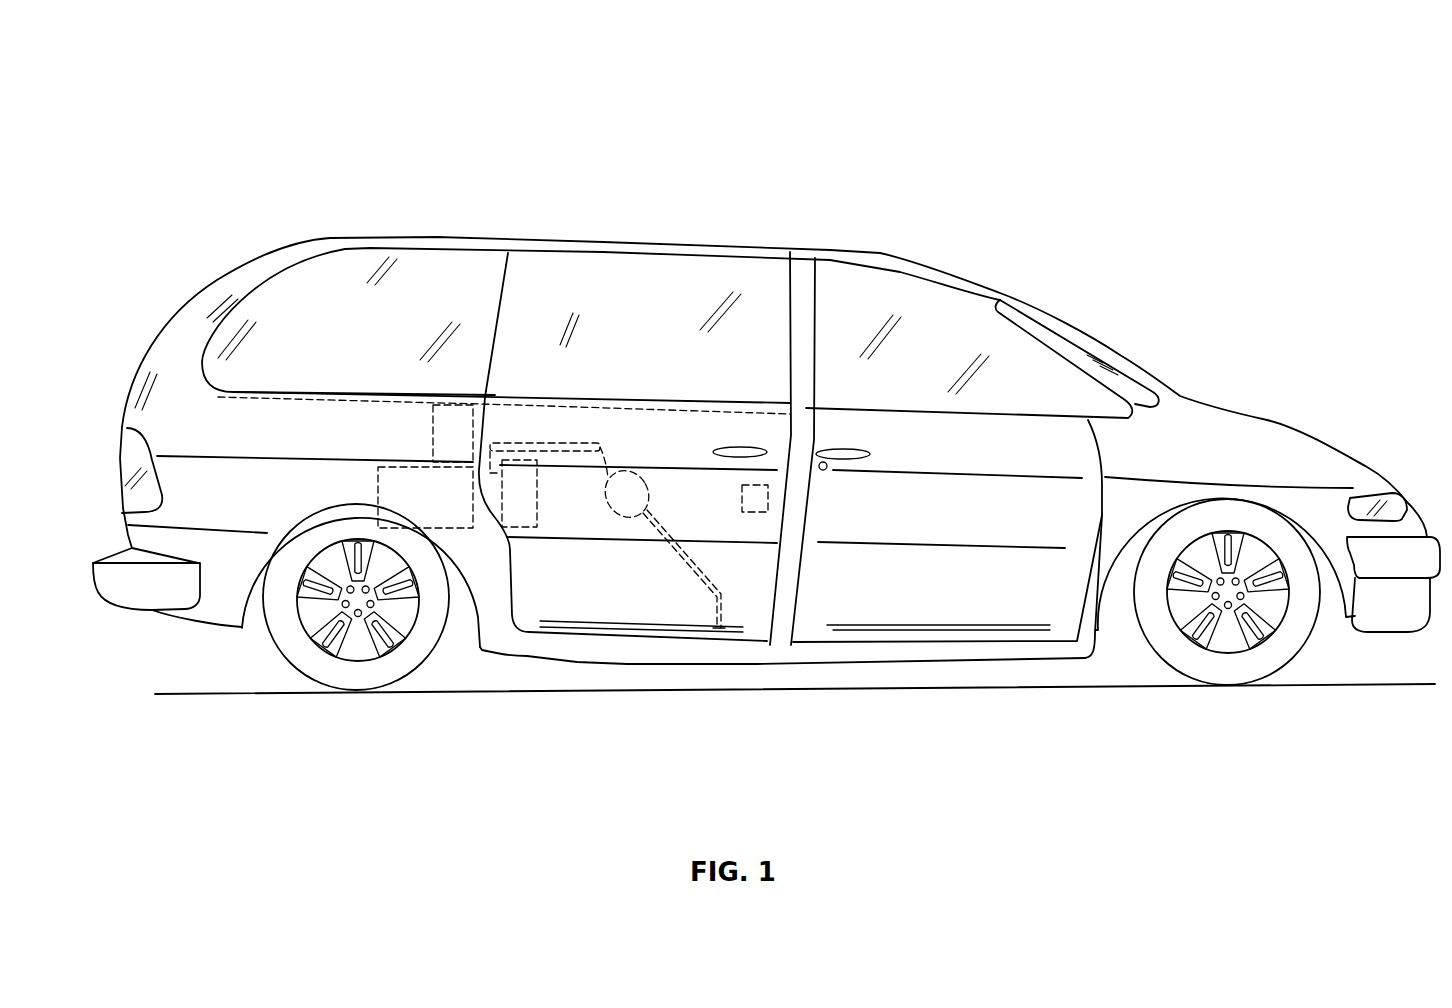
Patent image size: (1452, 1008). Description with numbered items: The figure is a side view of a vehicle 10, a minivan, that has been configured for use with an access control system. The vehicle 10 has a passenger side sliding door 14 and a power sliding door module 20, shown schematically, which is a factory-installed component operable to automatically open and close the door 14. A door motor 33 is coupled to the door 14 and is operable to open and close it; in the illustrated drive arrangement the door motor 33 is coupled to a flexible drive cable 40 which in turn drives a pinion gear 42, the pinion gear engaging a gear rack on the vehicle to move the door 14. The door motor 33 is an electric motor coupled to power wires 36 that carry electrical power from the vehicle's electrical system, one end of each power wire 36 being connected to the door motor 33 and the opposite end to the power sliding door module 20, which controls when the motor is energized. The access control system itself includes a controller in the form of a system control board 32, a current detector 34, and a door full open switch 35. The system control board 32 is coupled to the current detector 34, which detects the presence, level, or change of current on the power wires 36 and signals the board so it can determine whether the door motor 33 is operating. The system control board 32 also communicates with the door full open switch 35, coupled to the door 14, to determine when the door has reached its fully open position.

The vehicle 10 is at (157, 97).
The passenger side sliding door 14 is at (532, 345).
The power sliding door module 20 is at (447, 530).
The system control board 32 is at (408, 402).
The door motor 33 is at (640, 470).
The current detector 34 is at (520, 528).
The door full open switch 35 is at (755, 513).
The power wires 36 is at (510, 440).
The flexible drive cable 40 is at (683, 567).
The pinion gear 42 is at (720, 633).